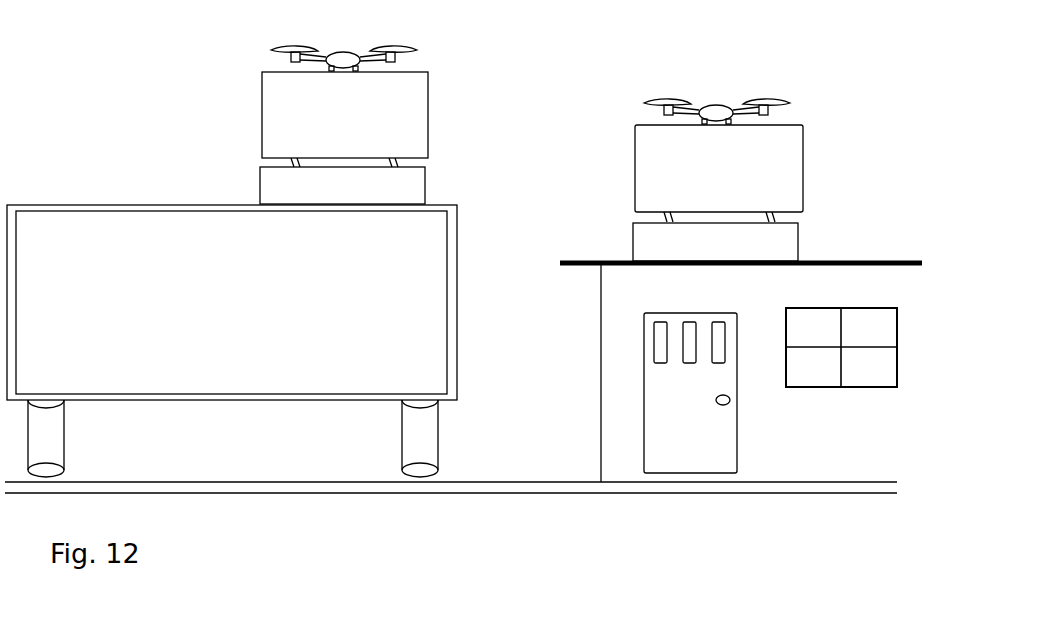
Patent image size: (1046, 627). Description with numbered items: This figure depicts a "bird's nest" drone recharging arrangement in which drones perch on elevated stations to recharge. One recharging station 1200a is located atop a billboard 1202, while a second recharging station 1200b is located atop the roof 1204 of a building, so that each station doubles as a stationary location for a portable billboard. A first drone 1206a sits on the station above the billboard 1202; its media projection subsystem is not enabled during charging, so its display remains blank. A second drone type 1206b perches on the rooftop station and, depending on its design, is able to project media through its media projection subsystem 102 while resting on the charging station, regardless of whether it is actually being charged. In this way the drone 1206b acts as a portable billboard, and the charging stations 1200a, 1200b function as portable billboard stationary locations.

The media projection subsystem 102 is at (635, 165).
The recharging station 1200a is at (260, 185).
The recharging station 1200b is at (752, 255).
The billboard 1202 is at (259, 336).
The roof 1204 is at (867, 260).
The drone 1206a is at (292, 62).
The drone 1206b is at (785, 105).